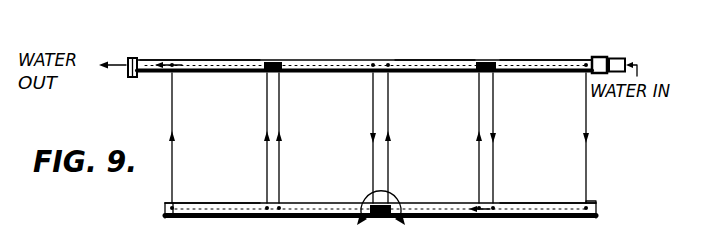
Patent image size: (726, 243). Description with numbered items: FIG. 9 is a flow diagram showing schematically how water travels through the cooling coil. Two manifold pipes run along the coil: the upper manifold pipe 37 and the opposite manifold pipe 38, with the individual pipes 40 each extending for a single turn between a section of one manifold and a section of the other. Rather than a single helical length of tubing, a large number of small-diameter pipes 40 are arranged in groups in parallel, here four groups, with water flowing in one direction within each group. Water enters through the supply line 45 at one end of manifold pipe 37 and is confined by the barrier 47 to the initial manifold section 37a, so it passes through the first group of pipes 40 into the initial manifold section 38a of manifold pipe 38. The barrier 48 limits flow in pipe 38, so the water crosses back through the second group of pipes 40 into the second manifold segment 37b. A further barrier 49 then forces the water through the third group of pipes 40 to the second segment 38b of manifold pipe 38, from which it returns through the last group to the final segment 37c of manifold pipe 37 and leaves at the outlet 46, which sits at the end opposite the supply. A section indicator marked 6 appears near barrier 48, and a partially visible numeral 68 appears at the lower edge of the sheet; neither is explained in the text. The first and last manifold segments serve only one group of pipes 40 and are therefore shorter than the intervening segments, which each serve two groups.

The manifold pipe 37 is at (322, 61).
The initial manifold section 37a is at (524, 61).
The second manifold segment 37b is at (405, 61).
The final manifold segment 37c is at (200, 62).
The manifold pipe 38 is at (303, 219).
The initial manifold section 38a is at (528, 219).
The second segment 38b is at (218, 219).
The pipes 40 is at (267, 110).
The supply line 45 is at (614, 57).
The outlet 46 is at (130, 58).
The barrier 47 is at (484, 61).
The barrier 48 is at (392, 194).
The barrier 49 is at (276, 60).
The section view indicator 6 is at (381, 217).
The partial numeral 68 is at (123, 236).